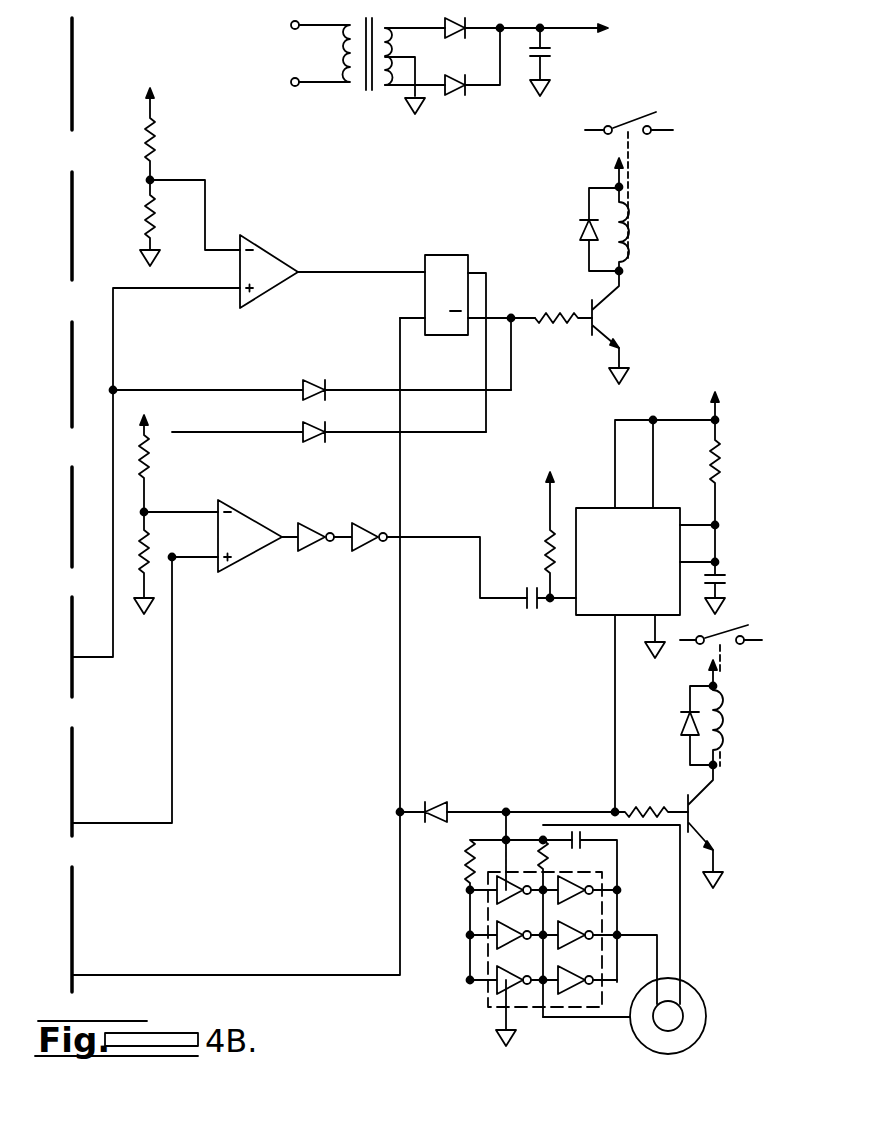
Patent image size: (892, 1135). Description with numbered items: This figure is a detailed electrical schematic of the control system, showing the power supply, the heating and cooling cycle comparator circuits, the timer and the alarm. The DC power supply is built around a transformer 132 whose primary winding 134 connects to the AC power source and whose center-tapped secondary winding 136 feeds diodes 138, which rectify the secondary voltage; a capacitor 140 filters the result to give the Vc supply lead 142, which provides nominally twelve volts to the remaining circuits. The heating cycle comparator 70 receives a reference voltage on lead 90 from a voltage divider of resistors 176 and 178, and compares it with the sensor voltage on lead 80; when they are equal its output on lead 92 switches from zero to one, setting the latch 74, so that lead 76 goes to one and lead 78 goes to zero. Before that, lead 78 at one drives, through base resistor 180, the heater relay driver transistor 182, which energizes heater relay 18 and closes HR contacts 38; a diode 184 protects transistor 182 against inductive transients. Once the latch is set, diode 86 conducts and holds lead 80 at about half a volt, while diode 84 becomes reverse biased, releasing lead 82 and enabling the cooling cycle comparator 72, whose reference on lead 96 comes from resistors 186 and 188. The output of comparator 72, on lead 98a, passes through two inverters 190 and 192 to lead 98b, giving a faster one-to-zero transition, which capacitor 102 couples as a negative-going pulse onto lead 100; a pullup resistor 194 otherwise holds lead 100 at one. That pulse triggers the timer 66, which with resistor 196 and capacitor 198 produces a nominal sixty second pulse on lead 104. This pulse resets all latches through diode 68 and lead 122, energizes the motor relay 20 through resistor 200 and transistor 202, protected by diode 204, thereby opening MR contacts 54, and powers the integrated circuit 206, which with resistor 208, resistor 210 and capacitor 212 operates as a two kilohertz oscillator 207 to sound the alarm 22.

The primary winding 134 is at (340, 44).
The transformer 132 is at (360, 86).
The secondary winding 136 is at (397, 42).
The diodes 138 is at (452, 70).
The capacitor 140 is at (586, 68).
The DC power supply lead 142 is at (602, 36).
The resistor 176 is at (160, 142).
The resistor 178 is at (150, 226).
The lead 90 is at (208, 200).
The heating cycle comparator 70 is at (262, 300).
The lead 92 is at (336, 276).
The lead 80 is at (108, 660).
The lead 82 is at (108, 821).
The diode 86 is at (312, 382).
The diode 84 is at (306, 442).
The resistor 186 is at (150, 455).
The resistor 188 is at (140, 560).
The lead 96 is at (186, 510).
The cooling cycle comparator 72 is at (252, 568).
The digital logic inverter 190 is at (316, 506).
The digital logic inverter 192 is at (362, 522).
The lead 98a is at (290, 540).
The lead 98b is at (456, 545).
The capacitor 102 is at (524, 614).
The lead 100 is at (556, 606).
The pullup resistor 194 is at (546, 560).
The lead 122 is at (96, 975).
The latch 74 is at (432, 336).
The lead 76 is at (488, 276).
The lead 78 is at (514, 353).
The base resistor 180 is at (552, 304).
The heater relay driver transistor 182 is at (612, 312).
The diode 184 is at (578, 233).
The heater relay 18 is at (640, 263).
The HR contacts 38 is at (638, 139).
The timer 66 is at (588, 496).
The resistor 196 is at (722, 456).
The capacitor 198 is at (724, 574).
The lead 104 is at (612, 708).
The MR contacts 54 is at (690, 648).
The motor relay 20 is at (702, 772).
The diode 204 is at (680, 722).
The resistor 200 is at (632, 808).
The transistor 202 is at (700, 798).
The diode 68 is at (440, 802).
The resistor 208 is at (470, 858).
The resistor 210 is at (596, 907).
The capacitor 212 is at (582, 834).
The oscillator 207 is at (454, 965).
The integrated circuit 206 is at (485, 996).
The alarm 22 is at (705, 1032).